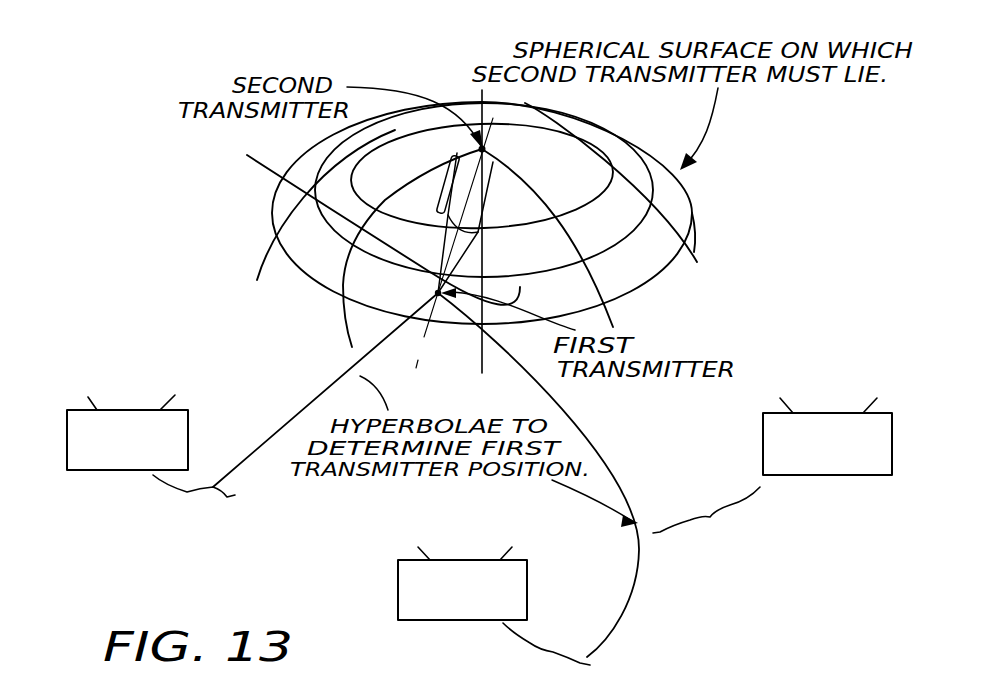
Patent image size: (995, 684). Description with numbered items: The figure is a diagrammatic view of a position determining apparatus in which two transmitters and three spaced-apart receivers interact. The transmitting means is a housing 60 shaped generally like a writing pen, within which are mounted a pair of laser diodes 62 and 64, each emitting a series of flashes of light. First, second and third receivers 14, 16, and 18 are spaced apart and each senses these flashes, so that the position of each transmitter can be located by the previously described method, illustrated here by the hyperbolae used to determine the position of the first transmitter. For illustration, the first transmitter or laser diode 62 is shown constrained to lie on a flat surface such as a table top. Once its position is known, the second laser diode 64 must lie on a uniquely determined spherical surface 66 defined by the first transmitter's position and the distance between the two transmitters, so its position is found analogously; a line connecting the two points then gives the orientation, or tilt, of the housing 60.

The first receiver 14 is at (110, 470).
The second receiver 16 is at (473, 620).
The third receiver 18 is at (840, 475).
The housing 60 is at (467, 182).
The first transmitter or laser diode 62 is at (438, 293).
The second transmitter or laser diode 64 is at (486, 150).
The spherical surface 66 is at (697, 201).